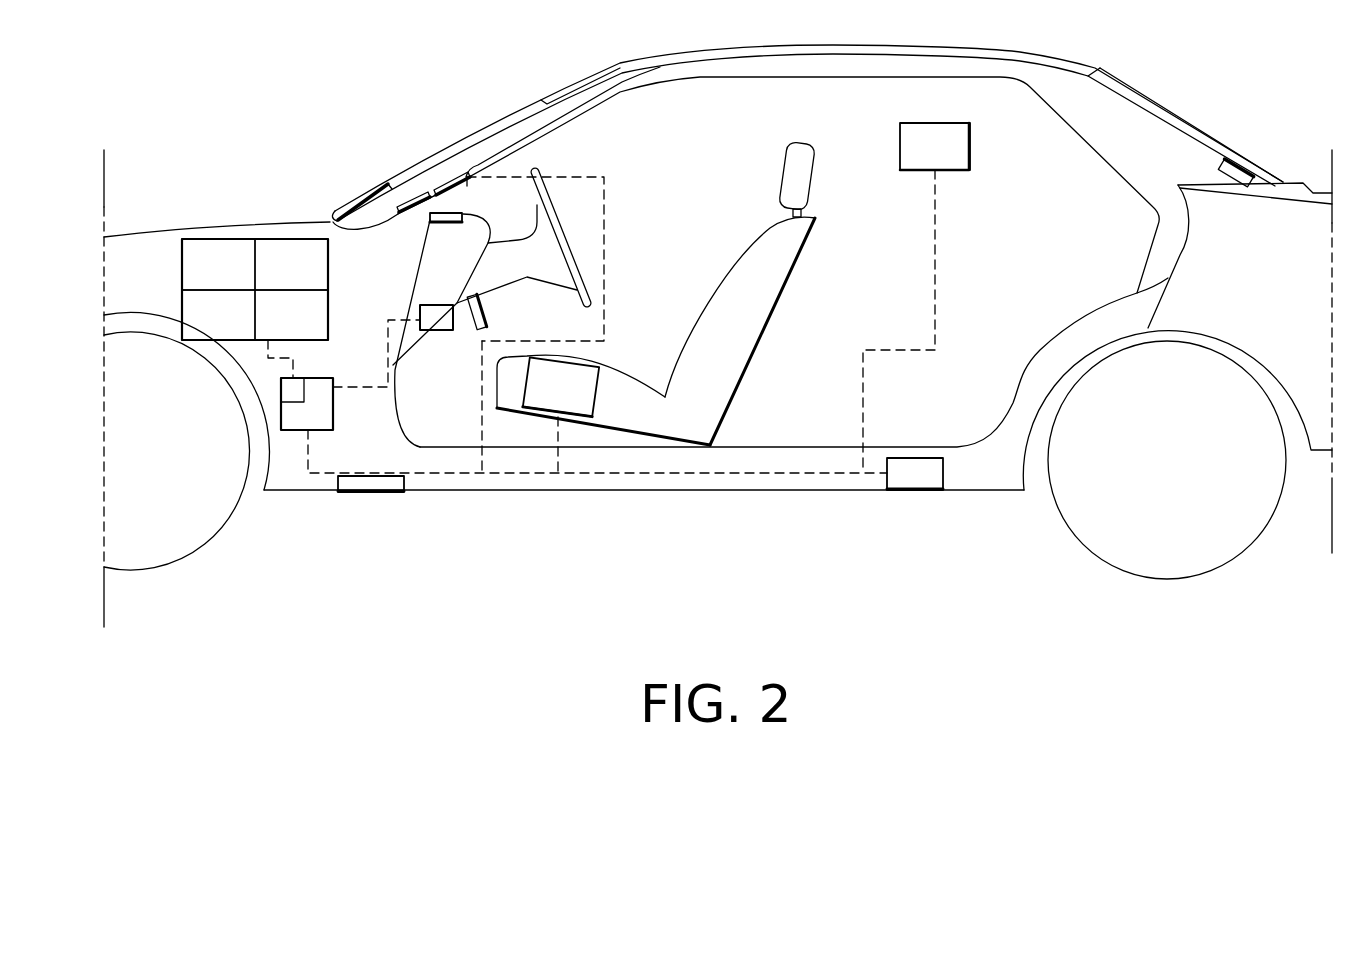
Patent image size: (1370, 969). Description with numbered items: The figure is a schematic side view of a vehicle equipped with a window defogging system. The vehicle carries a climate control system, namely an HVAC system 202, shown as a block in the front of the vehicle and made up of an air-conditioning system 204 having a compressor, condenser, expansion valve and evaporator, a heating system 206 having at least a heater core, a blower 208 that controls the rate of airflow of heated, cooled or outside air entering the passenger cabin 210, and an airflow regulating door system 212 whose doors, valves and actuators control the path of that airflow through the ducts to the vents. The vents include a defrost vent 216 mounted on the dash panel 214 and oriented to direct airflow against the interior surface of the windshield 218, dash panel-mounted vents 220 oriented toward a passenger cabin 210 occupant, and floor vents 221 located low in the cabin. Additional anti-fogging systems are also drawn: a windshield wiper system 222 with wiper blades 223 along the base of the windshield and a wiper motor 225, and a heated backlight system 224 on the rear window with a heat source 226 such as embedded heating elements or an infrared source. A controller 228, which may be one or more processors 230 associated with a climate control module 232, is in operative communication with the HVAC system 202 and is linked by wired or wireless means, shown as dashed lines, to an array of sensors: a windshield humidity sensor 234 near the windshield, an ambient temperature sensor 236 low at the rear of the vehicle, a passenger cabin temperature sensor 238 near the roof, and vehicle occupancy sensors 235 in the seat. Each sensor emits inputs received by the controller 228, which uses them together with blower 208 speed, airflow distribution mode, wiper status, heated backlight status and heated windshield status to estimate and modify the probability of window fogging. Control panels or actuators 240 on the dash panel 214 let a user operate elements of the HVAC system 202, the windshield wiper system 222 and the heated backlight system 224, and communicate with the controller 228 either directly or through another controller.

The HVAC system 202 is at (238, 238).
The air-conditioning system 204 is at (250, 282).
The heating system 206 is at (316, 282).
The blower 208 is at (316, 326).
The passenger cabin 210 is at (920, 291).
The airflow regulating door system 212 is at (250, 326).
The dash panel 214 is at (469, 279).
The defrost vent 216 is at (463, 214).
The windshield 218 is at (563, 96).
The dash panel-mounted vents 220 is at (483, 306).
The floor vents 221 is at (365, 485).
The windshield wiper system 222 is at (373, 176).
The wiper blades 223 is at (362, 194).
The heated backlight system 224 is at (1157, 105).
The wiper motor 225 is at (408, 218).
The heat source 226 is at (1240, 170).
The controller 228 is at (322, 434).
The processors 230 is at (298, 380).
The climate control module 232 is at (334, 404).
The windshield humidity sensor 234 is at (545, 141).
The vehicle occupancy sensors 235 is at (592, 403).
The ambient temperature sensor 236 is at (915, 460).
The passenger cabin temperature sensor 238 is at (962, 161).
The control panels or actuators 240 is at (440, 320).